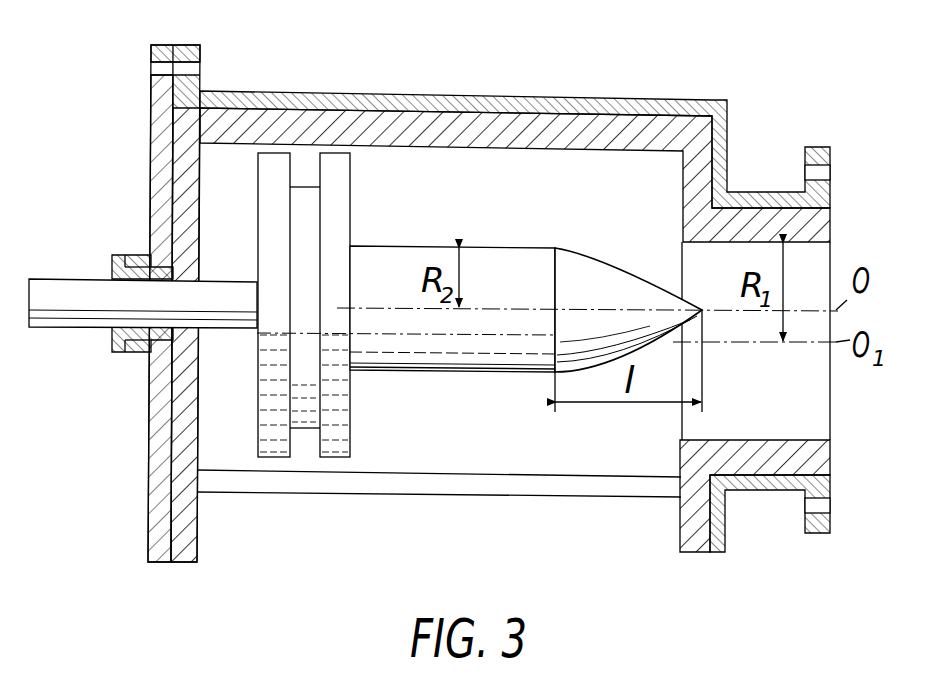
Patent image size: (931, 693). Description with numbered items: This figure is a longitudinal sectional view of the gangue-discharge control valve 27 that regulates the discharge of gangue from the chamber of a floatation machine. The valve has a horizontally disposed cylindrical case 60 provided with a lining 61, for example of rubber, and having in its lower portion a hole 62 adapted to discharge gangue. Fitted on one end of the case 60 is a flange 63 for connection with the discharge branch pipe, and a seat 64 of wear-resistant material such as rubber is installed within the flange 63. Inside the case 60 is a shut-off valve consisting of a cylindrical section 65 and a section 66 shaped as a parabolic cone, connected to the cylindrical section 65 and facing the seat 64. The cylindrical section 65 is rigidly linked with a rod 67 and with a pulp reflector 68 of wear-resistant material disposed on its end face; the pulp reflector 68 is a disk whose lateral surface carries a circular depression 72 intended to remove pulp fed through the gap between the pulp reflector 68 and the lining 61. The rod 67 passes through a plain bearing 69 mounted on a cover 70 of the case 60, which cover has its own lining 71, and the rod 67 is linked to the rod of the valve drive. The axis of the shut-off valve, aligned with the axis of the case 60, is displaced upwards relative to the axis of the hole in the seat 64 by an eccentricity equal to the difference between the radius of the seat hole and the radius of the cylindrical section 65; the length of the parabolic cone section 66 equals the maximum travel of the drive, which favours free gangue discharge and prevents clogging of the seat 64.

The gangue-discharge control valve 27 is at (492, 283).
The cylindrical case 60 is at (538, 130).
The lining 61 is at (547, 140).
The hole 62 is at (486, 485).
The flange 63 is at (830, 482).
The seat 64 is at (832, 221).
The cylindrical section 65 is at (438, 357).
The parabolic cone section 66 is at (595, 268).
The rod 67 is at (55, 317).
The pulp reflector 68 is at (328, 354).
The plain bearing 69 is at (112, 337).
The cover 70 is at (176, 303).
The lining 71 is at (190, 508).
The circular depression 72 is at (302, 433).